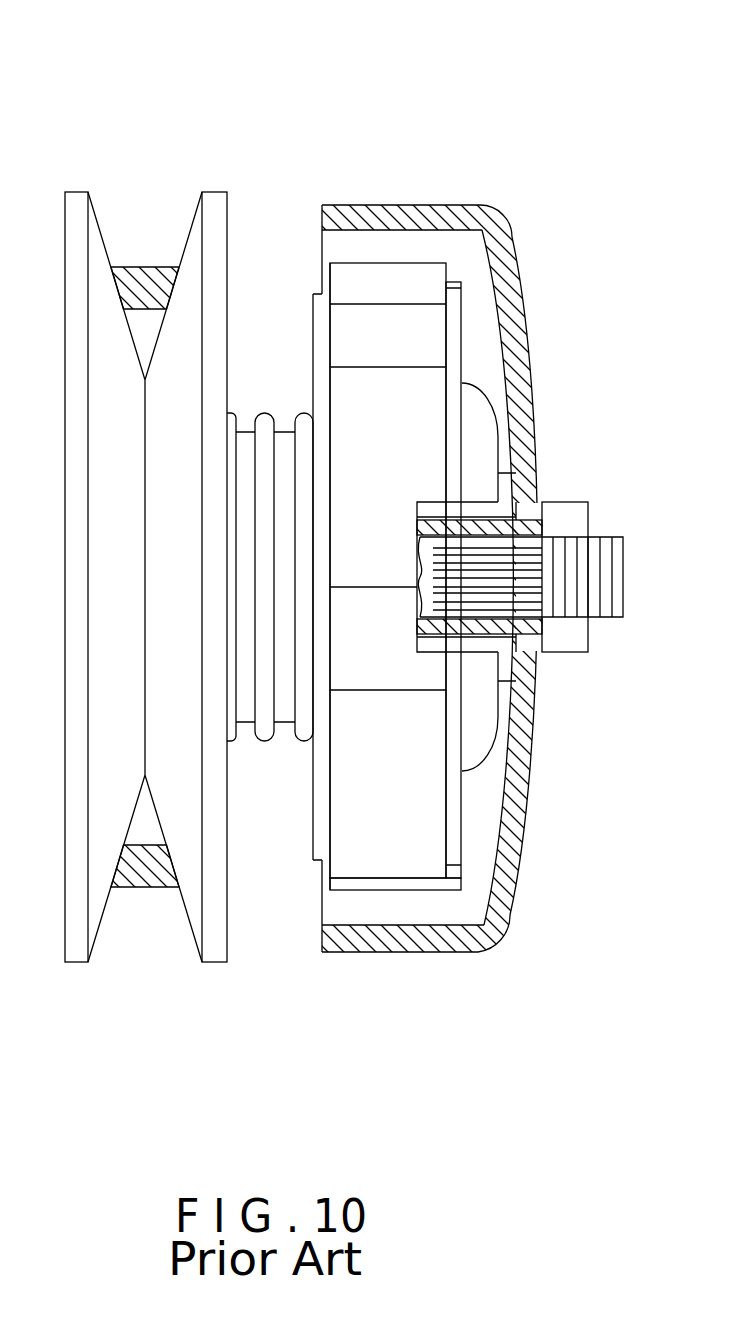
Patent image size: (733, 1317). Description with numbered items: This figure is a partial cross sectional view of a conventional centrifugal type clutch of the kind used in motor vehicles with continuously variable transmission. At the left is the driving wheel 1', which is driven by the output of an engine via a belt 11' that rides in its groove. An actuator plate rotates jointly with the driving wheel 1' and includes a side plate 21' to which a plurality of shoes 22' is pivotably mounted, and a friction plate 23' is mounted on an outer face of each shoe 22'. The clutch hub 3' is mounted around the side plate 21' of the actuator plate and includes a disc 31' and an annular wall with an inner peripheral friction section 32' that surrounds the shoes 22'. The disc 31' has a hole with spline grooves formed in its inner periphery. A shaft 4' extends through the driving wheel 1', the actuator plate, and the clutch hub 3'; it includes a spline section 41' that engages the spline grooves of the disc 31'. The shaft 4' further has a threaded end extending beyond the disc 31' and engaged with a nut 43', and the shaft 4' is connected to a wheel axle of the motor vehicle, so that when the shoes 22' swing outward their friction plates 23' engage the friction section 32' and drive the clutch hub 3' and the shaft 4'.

The driving wheel 1' is at (127, 481).
The belt 11' is at (145, 473).
The clutch hub 3' is at (466, 504).
The inner peripheral friction section 32' is at (417, 149).
The disc 31' is at (551, 577).
The shaft 4' is at (520, 484).
The spline section 41' is at (523, 538).
The nut 43' is at (583, 640).
The side plate 21' is at (426, 651).
The shoes 22' is at (375, 691).
The friction plate 23' is at (395, 968).